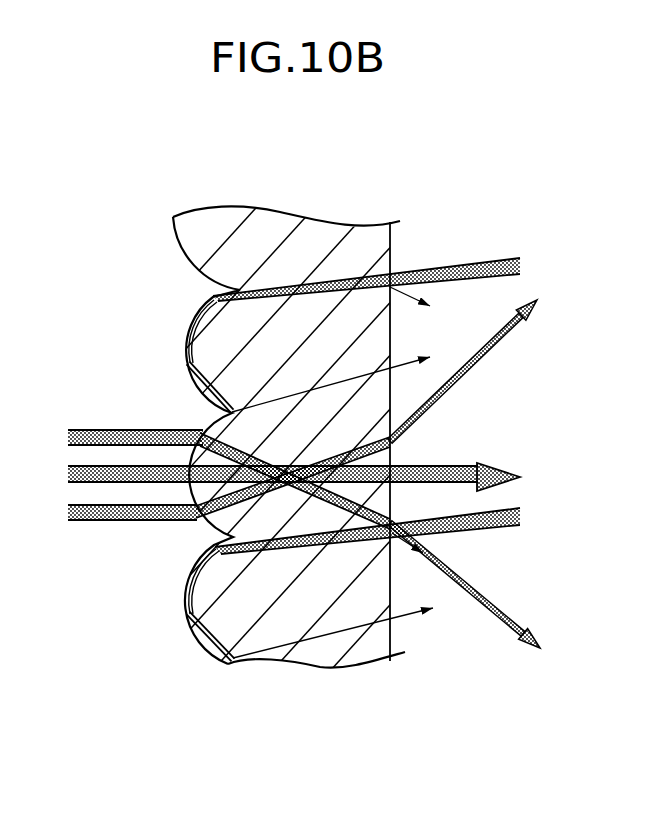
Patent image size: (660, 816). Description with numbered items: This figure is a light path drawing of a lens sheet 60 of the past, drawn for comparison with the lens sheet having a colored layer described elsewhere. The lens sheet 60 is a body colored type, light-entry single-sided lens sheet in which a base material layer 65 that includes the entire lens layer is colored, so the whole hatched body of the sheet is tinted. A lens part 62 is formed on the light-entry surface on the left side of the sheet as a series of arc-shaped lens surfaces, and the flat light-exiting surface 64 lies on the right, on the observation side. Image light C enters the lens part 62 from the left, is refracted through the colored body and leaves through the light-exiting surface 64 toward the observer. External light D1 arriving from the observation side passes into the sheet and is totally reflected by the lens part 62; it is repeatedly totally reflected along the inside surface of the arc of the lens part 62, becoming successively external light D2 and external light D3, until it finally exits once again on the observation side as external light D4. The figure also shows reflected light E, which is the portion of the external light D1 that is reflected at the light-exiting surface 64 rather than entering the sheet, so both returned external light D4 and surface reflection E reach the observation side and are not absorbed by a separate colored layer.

The lens sheet 60 is at (170, 579).
The lens part 62 is at (185, 617).
The light-exiting surface 64 is at (394, 641).
The base material layer 65 is at (222, 628).
The image light C is at (79, 428).
The external light D1 is at (428, 266).
The external light D2 is at (188, 319).
The external light D3 is at (187, 380).
The external light D4 is at (410, 357).
The reflected light E is at (410, 294).